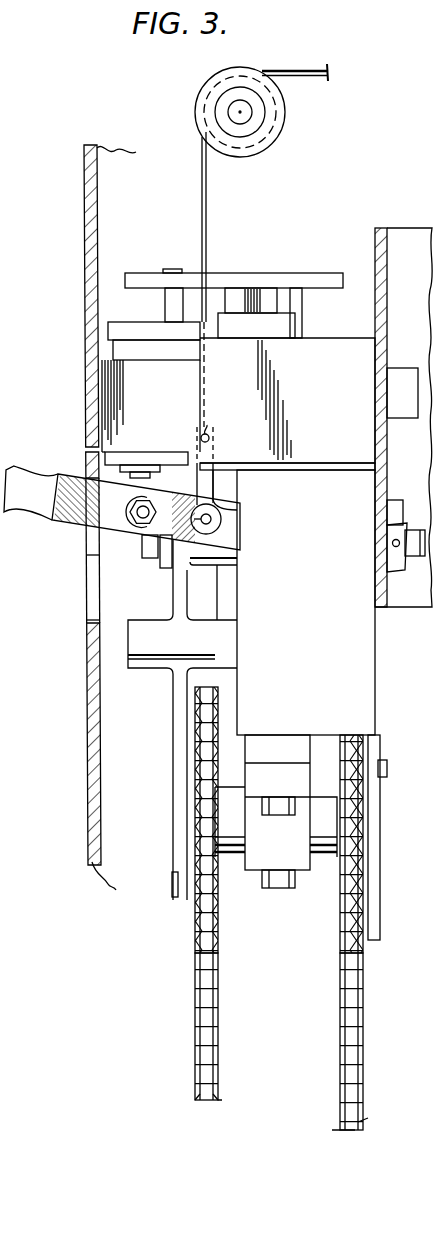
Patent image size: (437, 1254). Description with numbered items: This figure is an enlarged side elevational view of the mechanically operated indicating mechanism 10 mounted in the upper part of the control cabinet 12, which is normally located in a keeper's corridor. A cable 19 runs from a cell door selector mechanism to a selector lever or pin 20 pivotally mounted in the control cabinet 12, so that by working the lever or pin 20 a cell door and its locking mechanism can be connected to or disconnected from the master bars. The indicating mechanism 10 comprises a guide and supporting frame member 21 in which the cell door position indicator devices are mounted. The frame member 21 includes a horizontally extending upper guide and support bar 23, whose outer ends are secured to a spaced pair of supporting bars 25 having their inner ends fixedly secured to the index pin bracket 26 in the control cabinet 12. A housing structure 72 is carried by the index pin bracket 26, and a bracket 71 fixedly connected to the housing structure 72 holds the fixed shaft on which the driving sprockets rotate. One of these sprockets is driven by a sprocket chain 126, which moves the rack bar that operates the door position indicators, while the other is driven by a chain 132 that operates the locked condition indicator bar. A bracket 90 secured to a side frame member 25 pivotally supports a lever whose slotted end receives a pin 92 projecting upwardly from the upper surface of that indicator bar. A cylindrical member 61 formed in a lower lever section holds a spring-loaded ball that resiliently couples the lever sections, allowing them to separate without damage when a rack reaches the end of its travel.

The mechanically operated indicating mechanism 10 is at (319, 246).
The control cabinet 12 is at (52, 262).
The cable 19 is at (310, 78).
The selector lever or pin 20 is at (46, 508).
The guide and supporting frame member 21 is at (96, 369).
The upper guide and support bar 23 is at (157, 350).
The supporting bar 25 is at (326, 408).
The index pin bracket 26 is at (380, 320).
The cylindrical member 61 is at (162, 655).
The bracket 71 is at (284, 852).
The housing structure 72 is at (318, 646).
The bracket 90 is at (276, 272).
The pin 92 is at (175, 268).
The sprocket chain 126 is at (220, 992).
The chain 132 is at (365, 992).